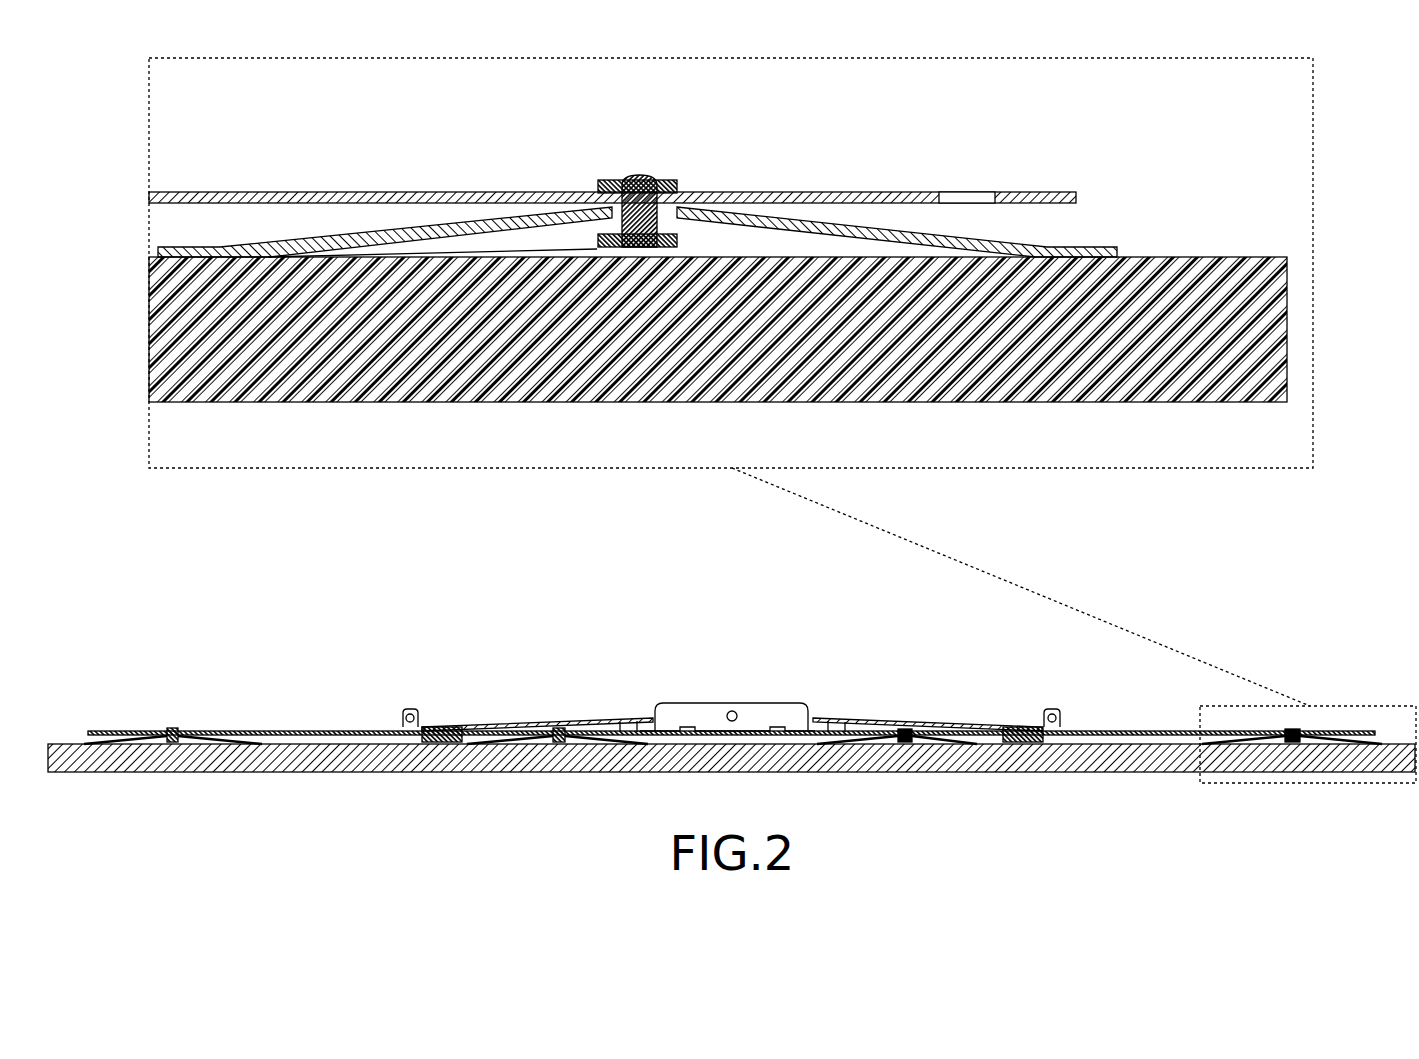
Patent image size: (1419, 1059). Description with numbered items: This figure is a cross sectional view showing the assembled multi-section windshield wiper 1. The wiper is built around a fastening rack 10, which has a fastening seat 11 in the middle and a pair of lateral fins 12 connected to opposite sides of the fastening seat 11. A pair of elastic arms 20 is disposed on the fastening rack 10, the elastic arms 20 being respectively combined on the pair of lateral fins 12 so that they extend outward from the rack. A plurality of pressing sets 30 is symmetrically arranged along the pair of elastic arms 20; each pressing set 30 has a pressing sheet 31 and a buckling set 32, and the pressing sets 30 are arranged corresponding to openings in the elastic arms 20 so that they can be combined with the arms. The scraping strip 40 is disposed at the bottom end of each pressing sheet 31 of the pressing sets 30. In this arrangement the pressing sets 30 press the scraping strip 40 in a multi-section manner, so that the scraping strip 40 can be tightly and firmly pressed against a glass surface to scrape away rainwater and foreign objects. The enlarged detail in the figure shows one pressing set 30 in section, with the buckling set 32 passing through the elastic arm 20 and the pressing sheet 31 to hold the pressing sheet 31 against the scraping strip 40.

The multi-section windshield wiper 1 is at (740, 521).
The fastening rack 10 is at (810, 638).
The fastening seat 11 is at (751, 712).
The lateral fins 12 is at (615, 717).
The elastic arms 20 is at (838, 192).
The pressing sets 30 is at (775, 105).
The pressing sheet 31 is at (783, 222).
The buckling set 32 is at (657, 176).
The scraping strip 40 is at (1205, 283).